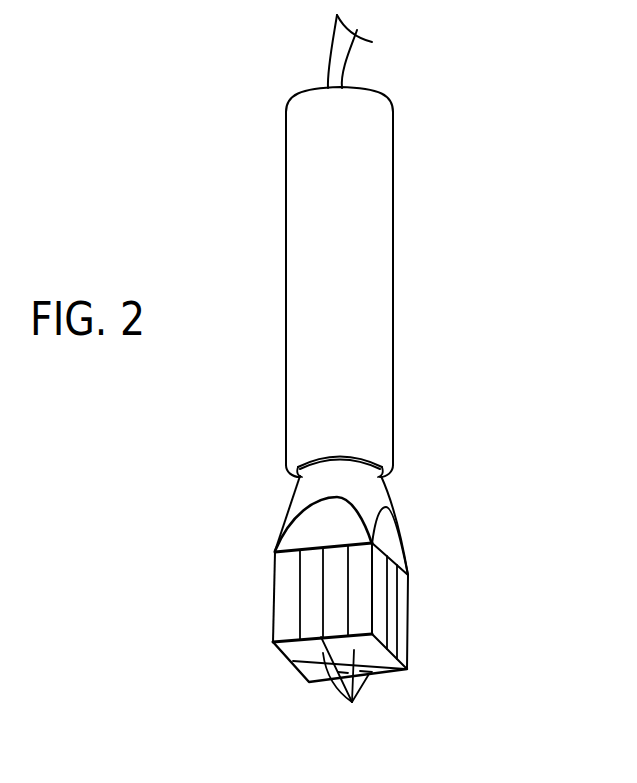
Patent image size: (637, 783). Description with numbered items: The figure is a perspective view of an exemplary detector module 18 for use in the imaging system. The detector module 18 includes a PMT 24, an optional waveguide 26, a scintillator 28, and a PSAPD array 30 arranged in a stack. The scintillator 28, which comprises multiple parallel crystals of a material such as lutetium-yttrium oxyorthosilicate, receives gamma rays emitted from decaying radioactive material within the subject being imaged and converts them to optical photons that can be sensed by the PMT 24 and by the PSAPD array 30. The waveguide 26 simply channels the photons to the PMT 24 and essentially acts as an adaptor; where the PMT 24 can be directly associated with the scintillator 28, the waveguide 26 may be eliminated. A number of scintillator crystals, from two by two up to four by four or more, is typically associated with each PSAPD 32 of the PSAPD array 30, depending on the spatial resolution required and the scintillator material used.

The detector module 18 is at (454, 485).
The PMT 24 is at (313, 391).
The waveguide 26 is at (306, 495).
The scintillator 28 is at (293, 592).
The PSAPD array 30 is at (278, 645).
The PSAPD 32 is at (346, 688).